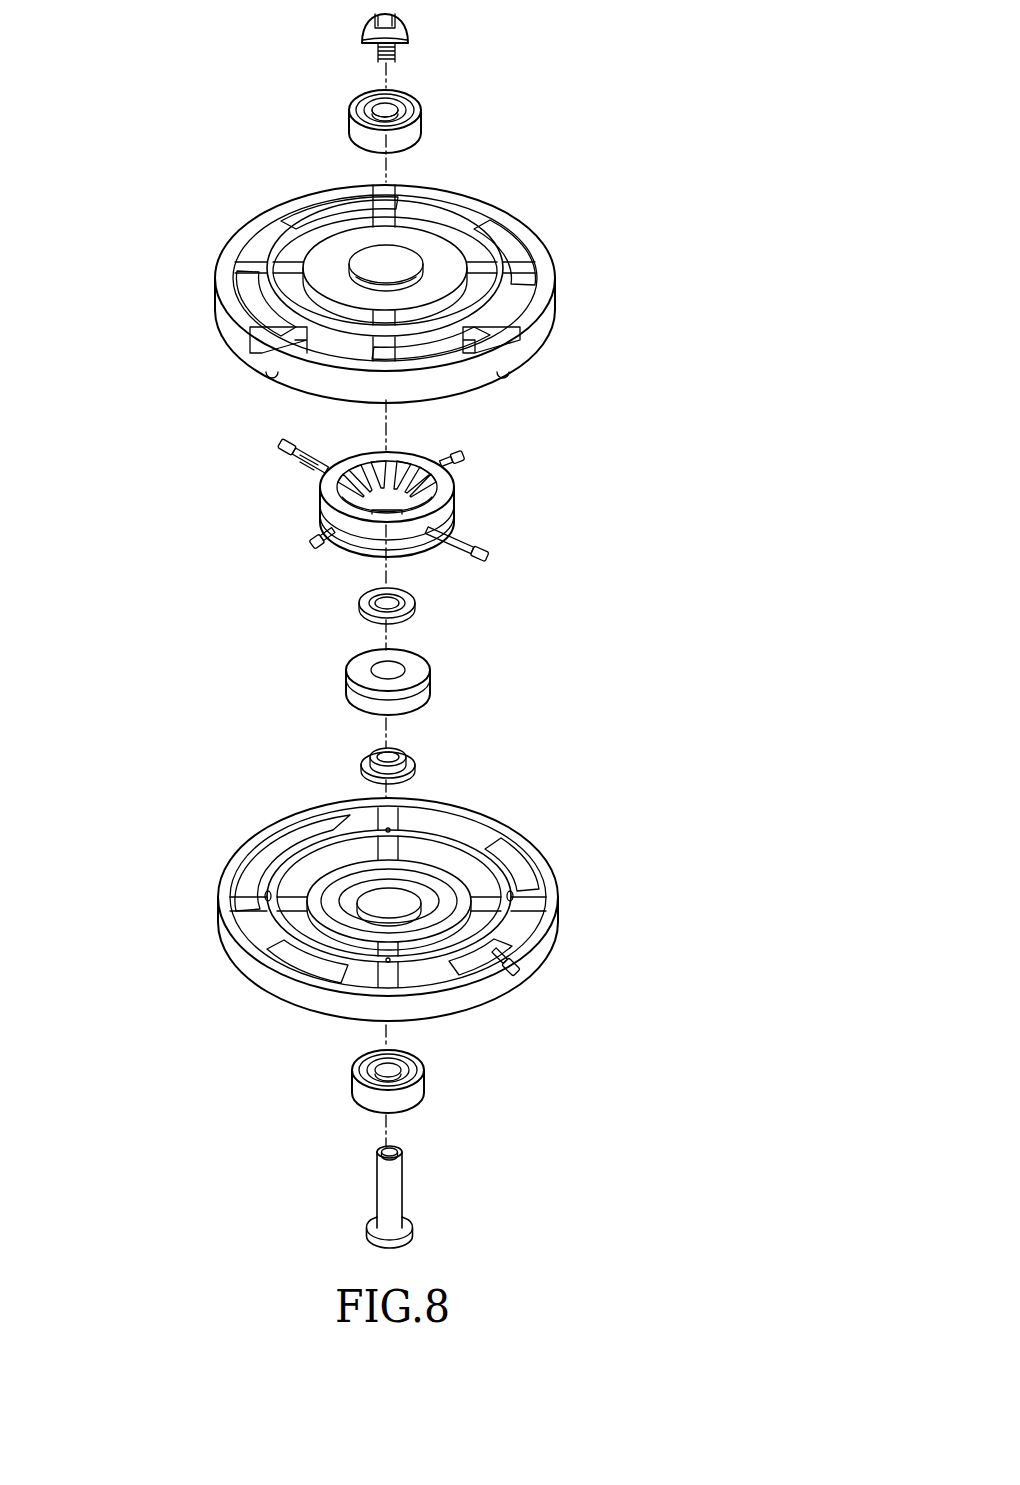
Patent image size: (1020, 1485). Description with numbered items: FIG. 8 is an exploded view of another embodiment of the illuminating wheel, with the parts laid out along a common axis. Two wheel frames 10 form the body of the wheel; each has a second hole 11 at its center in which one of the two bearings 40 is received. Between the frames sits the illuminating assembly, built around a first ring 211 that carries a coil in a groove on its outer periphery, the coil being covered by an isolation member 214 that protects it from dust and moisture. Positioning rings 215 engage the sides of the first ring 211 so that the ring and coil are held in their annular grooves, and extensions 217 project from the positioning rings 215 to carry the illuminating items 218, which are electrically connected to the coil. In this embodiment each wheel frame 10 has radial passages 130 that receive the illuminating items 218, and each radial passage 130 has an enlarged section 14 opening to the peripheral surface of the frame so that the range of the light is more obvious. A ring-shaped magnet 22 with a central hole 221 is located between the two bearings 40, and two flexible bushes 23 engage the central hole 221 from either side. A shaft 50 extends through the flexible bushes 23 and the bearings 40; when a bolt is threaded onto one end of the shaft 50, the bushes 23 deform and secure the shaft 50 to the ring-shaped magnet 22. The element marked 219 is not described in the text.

The wheel frame 10 is at (235, 340).
The second hole 11 is at (365, 267).
The enlarged section 14 is at (510, 975).
The radial passage 130 is at (510, 945).
The ring-shaped magnet 22 is at (347, 680).
The central hole 221 is at (378, 672).
The flexible bush 23 is at (412, 618).
The bearing 40 is at (412, 130).
The shaft 50 is at (383, 1185).
The first ring 211 is at (405, 468).
The isolation member 214 is at (365, 540).
The positioning ring 215 is at (436, 506).
The extension 217 is at (455, 525).
The illuminating item 218 is at (278, 443).
The pin slot 219 is at (312, 465).